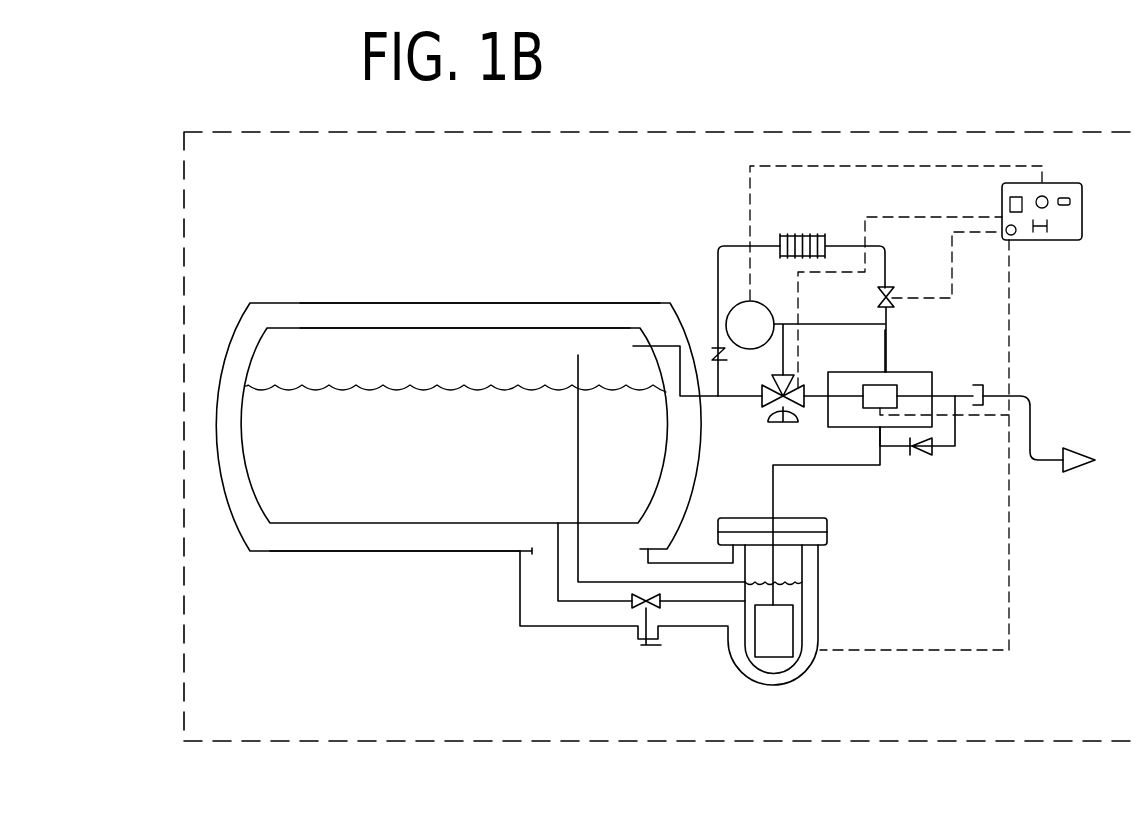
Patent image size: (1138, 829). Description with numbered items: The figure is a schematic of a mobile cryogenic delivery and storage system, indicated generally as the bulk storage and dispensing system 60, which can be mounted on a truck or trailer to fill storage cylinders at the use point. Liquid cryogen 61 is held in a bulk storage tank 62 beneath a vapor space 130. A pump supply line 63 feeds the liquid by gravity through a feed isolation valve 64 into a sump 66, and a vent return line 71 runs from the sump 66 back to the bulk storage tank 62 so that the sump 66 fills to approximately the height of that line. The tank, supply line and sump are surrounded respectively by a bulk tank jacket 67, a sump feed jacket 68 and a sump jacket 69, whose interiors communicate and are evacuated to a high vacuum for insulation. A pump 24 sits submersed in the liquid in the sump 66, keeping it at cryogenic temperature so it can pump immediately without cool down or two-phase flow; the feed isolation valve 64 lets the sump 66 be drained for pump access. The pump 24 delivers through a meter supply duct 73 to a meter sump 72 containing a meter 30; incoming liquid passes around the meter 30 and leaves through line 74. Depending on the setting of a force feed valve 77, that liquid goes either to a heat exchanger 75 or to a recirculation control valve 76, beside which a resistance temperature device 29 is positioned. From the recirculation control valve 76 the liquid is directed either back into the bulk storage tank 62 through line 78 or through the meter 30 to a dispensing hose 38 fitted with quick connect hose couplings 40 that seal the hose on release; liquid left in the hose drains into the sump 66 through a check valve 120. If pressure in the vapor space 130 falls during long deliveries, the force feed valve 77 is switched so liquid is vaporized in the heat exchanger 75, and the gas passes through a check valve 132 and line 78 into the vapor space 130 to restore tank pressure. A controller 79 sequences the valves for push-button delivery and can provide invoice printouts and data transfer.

The bulk storage and dispensing system 60 is at (646, 742).
The liquid cryogen 61 is at (447, 455).
The bulk storage tank 62 is at (463, 327).
The bulk tank jacket 67 is at (362, 553).
The vapor space 130 is at (400, 355).
The line 78 is at (663, 343).
The check valve 132 is at (717, 347).
The heat exchanger 75 is at (818, 236).
The resistance temperature device (RTD) 29 is at (772, 306).
The force feed valve 77 is at (892, 292).
The line 74 is at (888, 342).
The recirculation control valve 76 is at (768, 423).
The meter sump 72 is at (915, 371).
The meter 30 is at (899, 390).
The check valve 120 is at (933, 455).
The dispensing hose 38 is at (1030, 428).
The quick connect hose couplings 40 is at (1075, 470).
The controller 79 is at (1083, 215).
The meter supply duct 73 is at (855, 468).
The sump 66 is at (805, 618).
The sump jacket 69 is at (820, 643).
The pump 24 is at (792, 604).
The vent return line 71 is at (708, 584).
The pump supply line 63 is at (592, 602).
The feed isolation valve 64 is at (638, 613).
The sump feed jacket 68 is at (520, 612).